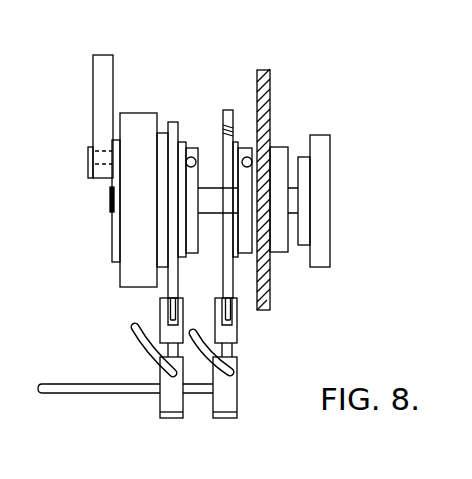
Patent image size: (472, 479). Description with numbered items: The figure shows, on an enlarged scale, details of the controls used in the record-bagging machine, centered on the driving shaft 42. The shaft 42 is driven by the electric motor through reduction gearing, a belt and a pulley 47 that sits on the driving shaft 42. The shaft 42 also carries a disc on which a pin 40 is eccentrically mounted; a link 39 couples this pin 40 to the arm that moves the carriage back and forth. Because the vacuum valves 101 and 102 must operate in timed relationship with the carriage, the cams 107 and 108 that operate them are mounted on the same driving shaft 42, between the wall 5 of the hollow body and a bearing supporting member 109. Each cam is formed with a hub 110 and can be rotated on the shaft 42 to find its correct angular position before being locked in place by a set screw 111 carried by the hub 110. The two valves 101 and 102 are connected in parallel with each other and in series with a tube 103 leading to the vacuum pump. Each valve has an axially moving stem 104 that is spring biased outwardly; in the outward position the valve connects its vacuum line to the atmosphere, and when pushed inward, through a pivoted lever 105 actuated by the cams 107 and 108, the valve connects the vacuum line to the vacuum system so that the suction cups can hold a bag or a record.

The wall 5 is at (270, 83).
The link 39 is at (100, 73).
The pin 40 is at (88, 156).
The driving shaft 42 is at (205, 202).
The pulley 47 is at (320, 167).
The valve 101 is at (178, 398).
The valve 102 is at (228, 407).
The tube 103 is at (110, 393).
The valve stem 104 is at (238, 347).
The pivoted lever 105 is at (158, 308).
The cam 107 is at (172, 120).
The cam 108 is at (232, 109).
The bearing supporting member 109 is at (140, 122).
The hub 110 is at (193, 146).
The set screw 111 is at (254, 156).